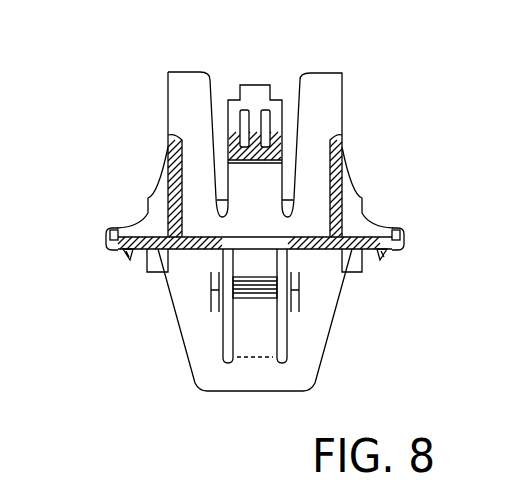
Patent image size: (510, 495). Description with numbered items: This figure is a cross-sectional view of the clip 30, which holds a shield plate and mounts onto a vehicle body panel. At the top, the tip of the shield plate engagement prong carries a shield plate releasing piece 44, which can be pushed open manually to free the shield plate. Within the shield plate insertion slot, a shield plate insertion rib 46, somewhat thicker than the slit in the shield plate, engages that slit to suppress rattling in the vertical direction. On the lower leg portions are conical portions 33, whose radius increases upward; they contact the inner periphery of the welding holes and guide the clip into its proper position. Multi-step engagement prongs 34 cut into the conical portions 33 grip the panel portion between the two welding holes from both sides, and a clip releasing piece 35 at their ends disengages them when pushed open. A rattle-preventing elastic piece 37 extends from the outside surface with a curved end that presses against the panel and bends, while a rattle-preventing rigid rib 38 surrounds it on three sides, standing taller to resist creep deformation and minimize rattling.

The clip 30 is at (353, 82).
The conical portion 33 is at (308, 333).
The multi-step engagement prong 34 is at (245, 300).
The clip releasing piece 35 is at (242, 259).
The rattle-preventing elastic piece 37 is at (130, 252).
The rattle-preventing rigid rib 38 is at (108, 240).
The shield plate releasing piece 44 is at (259, 90).
The shield plate insertion rib 46 is at (343, 125).